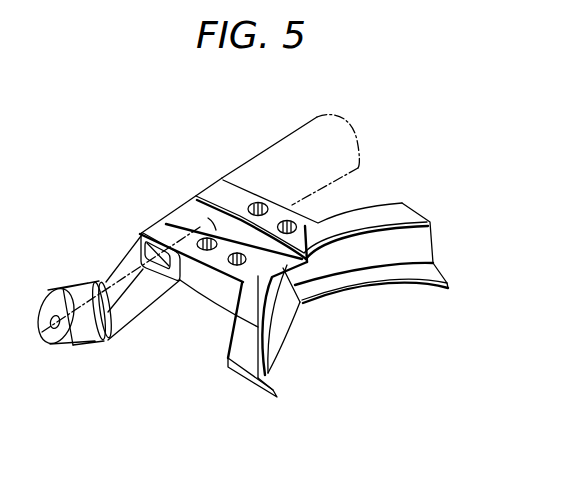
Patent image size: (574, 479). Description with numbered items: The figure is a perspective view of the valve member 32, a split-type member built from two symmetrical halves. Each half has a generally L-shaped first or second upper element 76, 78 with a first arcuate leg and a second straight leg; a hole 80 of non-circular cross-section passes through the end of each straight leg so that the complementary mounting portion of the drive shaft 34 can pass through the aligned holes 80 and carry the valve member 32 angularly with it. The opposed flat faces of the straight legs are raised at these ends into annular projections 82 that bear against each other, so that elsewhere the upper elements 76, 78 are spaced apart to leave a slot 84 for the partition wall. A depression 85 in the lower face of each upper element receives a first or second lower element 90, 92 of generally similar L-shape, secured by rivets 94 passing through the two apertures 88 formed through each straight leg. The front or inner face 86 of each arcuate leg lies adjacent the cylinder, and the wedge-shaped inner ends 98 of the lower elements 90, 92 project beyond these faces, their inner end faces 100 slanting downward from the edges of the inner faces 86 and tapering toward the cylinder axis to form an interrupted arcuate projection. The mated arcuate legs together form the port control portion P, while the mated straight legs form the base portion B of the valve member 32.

The valve member 32 is at (422, 206).
The drive shaft 34 is at (357, 138).
The first upper element 76 is at (187, 282).
The second upper element 78 is at (296, 212).
The hole 80 is at (140, 305).
The annular projections 82 is at (187, 205).
The slot 84 is at (296, 283).
The depression 85 is at (192, 258).
The inner face 86 is at (421, 237).
The apertures 88 is at (288, 220).
The first lower element 90 is at (237, 371).
The second lower element 92 is at (436, 262).
The rivets 94 is at (446, 266).
The inner ends 98 is at (257, 390).
The inner end faces 100 is at (375, 273).
The base portion B is at (222, 178).
The port control portion P is at (443, 294).